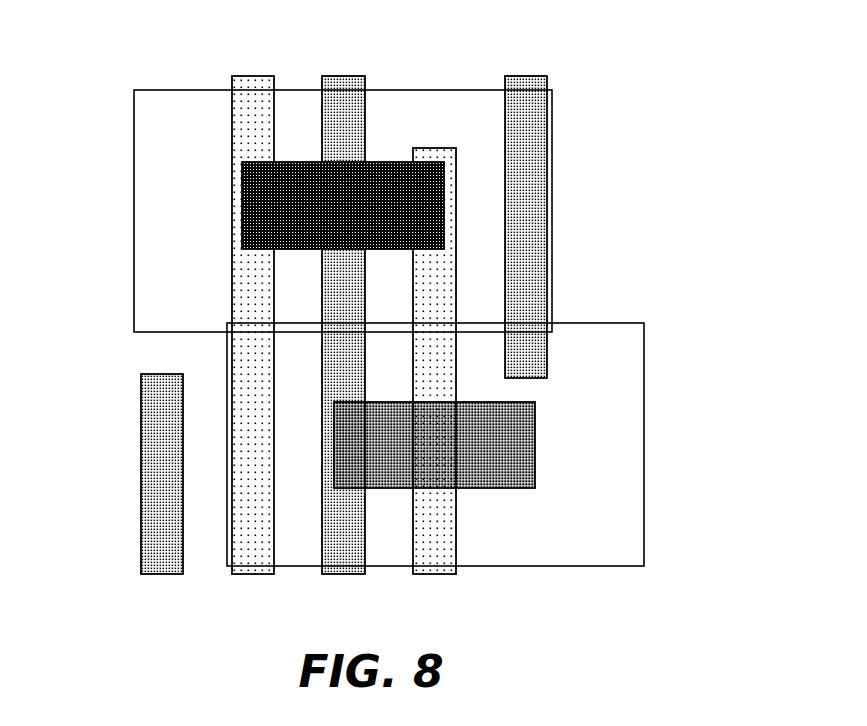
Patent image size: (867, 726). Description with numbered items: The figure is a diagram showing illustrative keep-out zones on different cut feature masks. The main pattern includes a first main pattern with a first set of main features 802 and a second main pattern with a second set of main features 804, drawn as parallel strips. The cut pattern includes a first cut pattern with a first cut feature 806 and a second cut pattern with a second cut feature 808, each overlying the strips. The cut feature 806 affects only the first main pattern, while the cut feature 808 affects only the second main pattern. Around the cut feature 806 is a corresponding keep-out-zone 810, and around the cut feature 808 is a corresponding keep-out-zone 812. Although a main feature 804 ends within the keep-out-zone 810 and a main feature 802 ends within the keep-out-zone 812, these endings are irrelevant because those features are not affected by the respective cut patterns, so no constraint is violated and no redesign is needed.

The first set of main features 802 is at (347, 76).
The second set of main features 804 is at (250, 76).
The first cut feature 806 is at (343, 205).
The second cut feature 808 is at (434, 445).
The keep-out-zone 810 is at (552, 187).
The keep-out-zone 812 is at (644, 377).